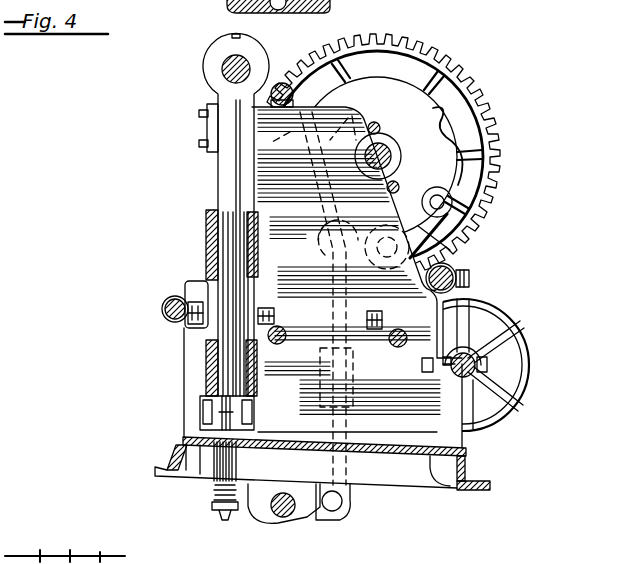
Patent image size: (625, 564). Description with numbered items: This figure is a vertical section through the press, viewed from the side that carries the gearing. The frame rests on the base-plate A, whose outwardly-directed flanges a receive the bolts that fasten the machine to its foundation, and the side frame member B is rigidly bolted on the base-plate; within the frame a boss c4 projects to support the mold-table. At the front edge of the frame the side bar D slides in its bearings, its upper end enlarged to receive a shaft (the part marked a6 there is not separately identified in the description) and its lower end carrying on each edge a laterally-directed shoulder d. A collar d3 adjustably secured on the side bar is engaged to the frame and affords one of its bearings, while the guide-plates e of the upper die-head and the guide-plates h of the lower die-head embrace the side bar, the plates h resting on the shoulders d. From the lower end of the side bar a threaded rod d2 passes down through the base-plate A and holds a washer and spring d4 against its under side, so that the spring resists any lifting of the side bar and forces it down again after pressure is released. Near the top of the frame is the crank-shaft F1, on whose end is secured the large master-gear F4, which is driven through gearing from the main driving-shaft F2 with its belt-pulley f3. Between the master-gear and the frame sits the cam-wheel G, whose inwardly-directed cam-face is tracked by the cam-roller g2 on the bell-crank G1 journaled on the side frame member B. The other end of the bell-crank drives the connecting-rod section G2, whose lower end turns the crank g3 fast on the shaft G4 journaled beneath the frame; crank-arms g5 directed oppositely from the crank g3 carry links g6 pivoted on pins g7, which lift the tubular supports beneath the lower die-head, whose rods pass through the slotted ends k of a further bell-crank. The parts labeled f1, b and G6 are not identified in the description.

The pin a6 is at (222, 70).
The bracket f1 is at (260, 127).
The side bar D is at (228, 182).
The guide-plates e is at (215, 240).
The clamp b is at (207, 305).
The collar d3 is at (208, 276).
The guide-plates h is at (210, 366).
The laterally-directed shoulders d is at (212, 417).
The washer and spring d4 is at (212, 492).
The bolt or rod d2 is at (222, 522).
The boss c4 is at (280, 316).
The shaft G4 is at (278, 518).
The crank g3 is at (322, 527).
The connecting-rod section G2 is at (350, 495).
The side frame member B is at (405, 428).
The base-plate A is at (432, 470).
The outwardly-directed flanges a is at (478, 483).
The cam-wheel G is at (424, 112).
The master-gear F4 is at (485, 103).
The crank-shaft F1 is at (385, 154).
The cam-roller g2 is at (448, 201).
The bell-crank G1 is at (460, 236).
The main driving-shaft F2 is at (471, 356).
The belt-pulley f3 is at (536, 330).
The slotted parallel ends k is at (226, 4).
The links g6 is at (235, 4).
The shaft or pin g7 is at (270, 4).
The crank-arms g5 is at (300, 4).
The arm G6 is at (147, 9).